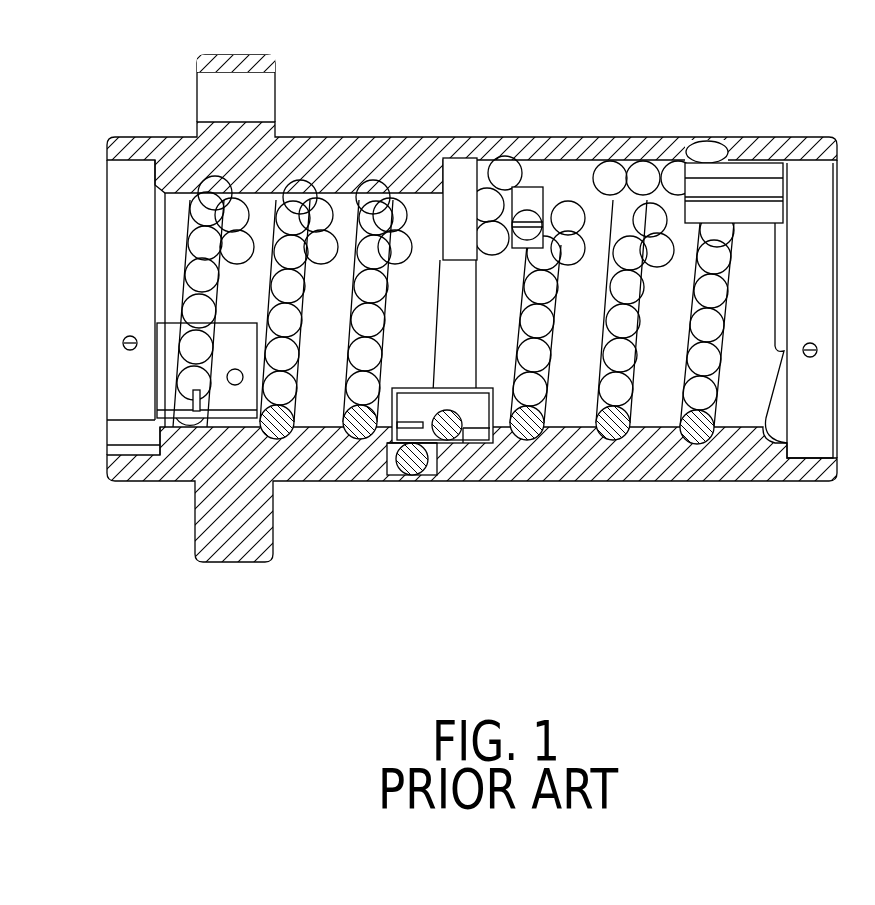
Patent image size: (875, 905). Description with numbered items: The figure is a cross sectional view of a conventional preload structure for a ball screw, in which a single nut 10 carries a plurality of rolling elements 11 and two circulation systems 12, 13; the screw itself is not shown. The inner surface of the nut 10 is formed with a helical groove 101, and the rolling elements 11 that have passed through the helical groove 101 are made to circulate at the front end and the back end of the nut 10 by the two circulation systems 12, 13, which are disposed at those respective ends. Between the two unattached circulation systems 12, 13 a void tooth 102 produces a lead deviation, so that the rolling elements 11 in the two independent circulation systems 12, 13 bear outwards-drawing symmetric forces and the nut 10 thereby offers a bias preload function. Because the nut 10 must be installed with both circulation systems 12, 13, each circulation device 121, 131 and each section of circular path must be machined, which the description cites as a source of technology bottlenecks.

The nut 10 is at (472, 314).
The helical groove 101 is at (717, 410).
The void tooth 102 is at (434, 198).
The rolling elements 11 is at (640, 172).
The circulation system 12 is at (727, 125).
The circulation device 121 is at (530, 197).
The circulation system 13 is at (382, 496).
The circulation device 131 is at (167, 395).